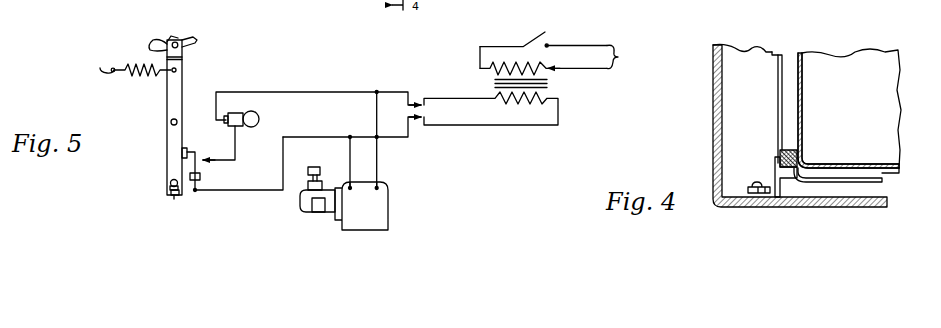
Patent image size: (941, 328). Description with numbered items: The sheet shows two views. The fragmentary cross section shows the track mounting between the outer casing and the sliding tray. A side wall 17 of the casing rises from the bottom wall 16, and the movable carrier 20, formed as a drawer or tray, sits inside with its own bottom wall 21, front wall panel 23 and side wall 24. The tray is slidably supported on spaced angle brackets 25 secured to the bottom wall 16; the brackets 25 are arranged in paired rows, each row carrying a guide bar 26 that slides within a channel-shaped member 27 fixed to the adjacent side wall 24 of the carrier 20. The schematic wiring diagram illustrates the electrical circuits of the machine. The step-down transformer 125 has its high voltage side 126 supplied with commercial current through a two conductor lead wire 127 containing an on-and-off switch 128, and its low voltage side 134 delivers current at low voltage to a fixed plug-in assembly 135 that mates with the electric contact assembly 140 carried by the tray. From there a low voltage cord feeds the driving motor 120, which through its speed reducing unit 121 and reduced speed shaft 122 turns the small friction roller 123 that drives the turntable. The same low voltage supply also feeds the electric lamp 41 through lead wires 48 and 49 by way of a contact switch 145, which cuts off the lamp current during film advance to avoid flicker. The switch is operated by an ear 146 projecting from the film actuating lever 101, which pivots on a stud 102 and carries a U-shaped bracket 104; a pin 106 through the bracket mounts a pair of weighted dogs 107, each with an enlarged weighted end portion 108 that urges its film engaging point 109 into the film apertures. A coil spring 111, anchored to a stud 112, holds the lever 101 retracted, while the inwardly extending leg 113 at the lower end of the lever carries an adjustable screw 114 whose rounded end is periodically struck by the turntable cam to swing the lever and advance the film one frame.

In FIG. 5, the lever 101 is at (168, 102).
In FIG. 5, the stud 102 is at (171, 122).
In FIG. 5, the U-shaped bracket 104 is at (182, 53).
In FIG. 5, the pin 106 is at (178, 38).
In FIG. 5, the weighted dogs 107 is at (168, 34).
In FIG. 5, the enlarged and weighted end portion 108 is at (152, 48).
In FIG. 5, the film engaging point 109 is at (192, 37).
In FIG. 5, the coil spring 111 is at (148, 77).
In FIG. 5, the stud 112 is at (100, 67).
In FIG. 5, the leg 113 is at (171, 193).
In FIG. 5, the screw 114 is at (170, 183).
In FIG. 5, the driving motor 120 is at (382, 210).
In FIG. 5, the speed reducing unit 121 is at (323, 212).
In FIG. 5, the reduced speed shaft 122 is at (320, 185).
In FIG. 5, the friction roller 123 is at (316, 167).
In FIG. 5, the step-down transformer 125 is at (494, 83).
In FIG. 5, the high voltage side 126 is at (540, 66).
In FIG. 5, the two conductor lead wire 127 is at (623, 56).
In FIG. 5, the on-and-off switch 128 is at (534, 37).
In FIG. 5, the low voltage side 134 is at (530, 102).
In FIG. 5, the fixed plug-in assembly 135 is at (418, 128).
In FIG. 5, the electric contact assembly 140 is at (450, 169).
In FIG. 5, the contact switch 145 is at (203, 176).
In FIG. 5, the ear 146 is at (181, 152).
In FIG. 5, the electric lamp 41 is at (258, 115).
In FIG. 5, the lead wire 48 is at (235, 146).
In FIG. 5, the lead wire 49 is at (280, 92).
In FIG. 4, the bottom wall 16 is at (830, 207).
In FIG. 4, the side walls 17 is at (713, 115).
In FIG. 4, the movable carrier 20 is at (868, 73).
In FIG. 4, the bottom wall 21 is at (882, 166).
In FIG. 4, the front wall panel 23 is at (885, 92).
In FIG. 4, the side walls 24 is at (803, 76).
In FIG. 4, the angle brackets 25 is at (775, 172).
In FIG. 4, the guide bar 26 is at (779, 158).
In FIG. 4, the channel-shaped member 27 is at (792, 148).